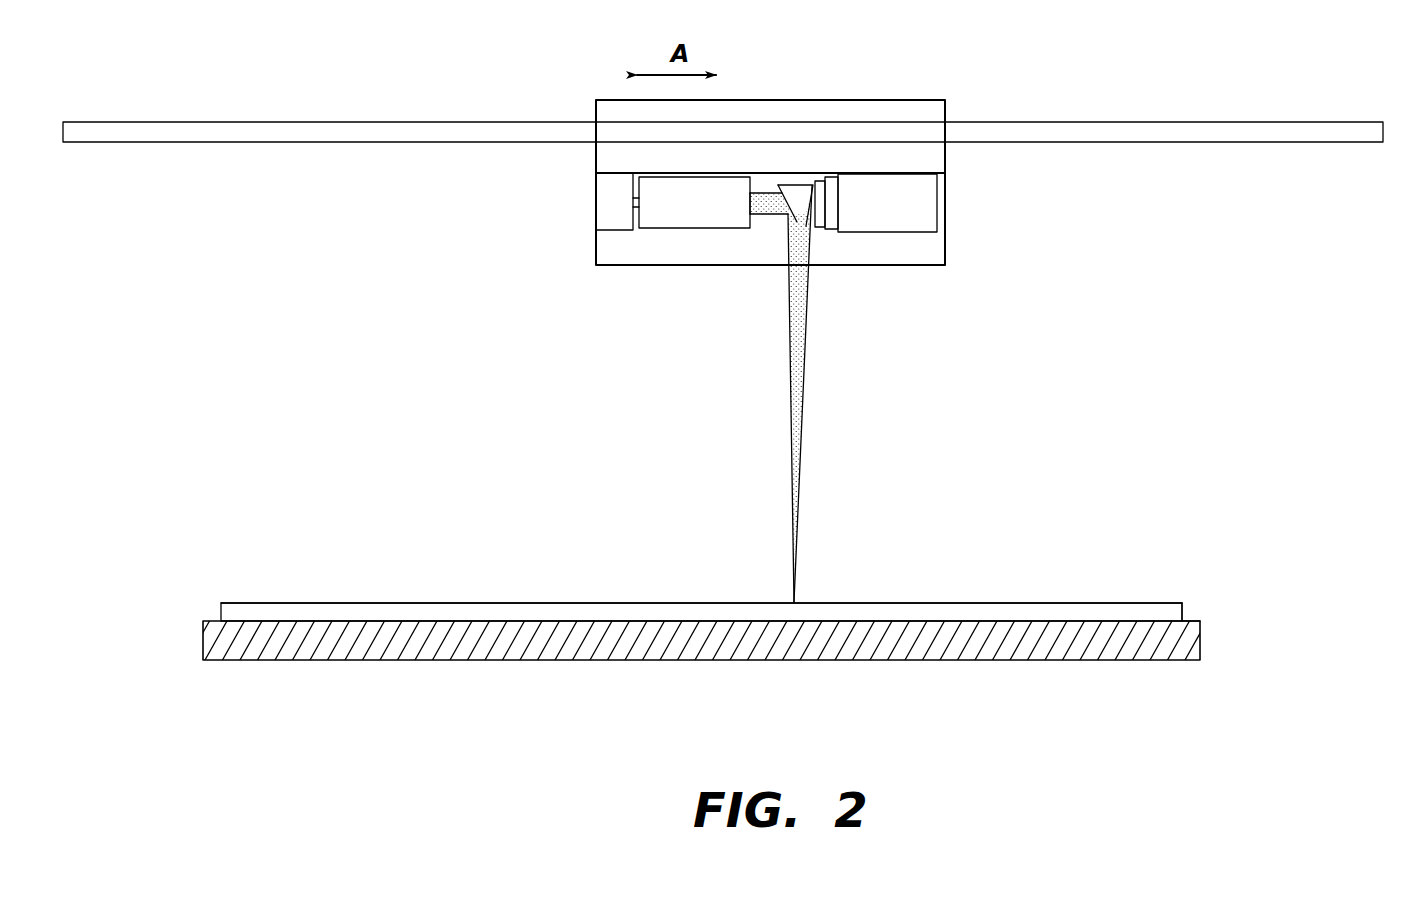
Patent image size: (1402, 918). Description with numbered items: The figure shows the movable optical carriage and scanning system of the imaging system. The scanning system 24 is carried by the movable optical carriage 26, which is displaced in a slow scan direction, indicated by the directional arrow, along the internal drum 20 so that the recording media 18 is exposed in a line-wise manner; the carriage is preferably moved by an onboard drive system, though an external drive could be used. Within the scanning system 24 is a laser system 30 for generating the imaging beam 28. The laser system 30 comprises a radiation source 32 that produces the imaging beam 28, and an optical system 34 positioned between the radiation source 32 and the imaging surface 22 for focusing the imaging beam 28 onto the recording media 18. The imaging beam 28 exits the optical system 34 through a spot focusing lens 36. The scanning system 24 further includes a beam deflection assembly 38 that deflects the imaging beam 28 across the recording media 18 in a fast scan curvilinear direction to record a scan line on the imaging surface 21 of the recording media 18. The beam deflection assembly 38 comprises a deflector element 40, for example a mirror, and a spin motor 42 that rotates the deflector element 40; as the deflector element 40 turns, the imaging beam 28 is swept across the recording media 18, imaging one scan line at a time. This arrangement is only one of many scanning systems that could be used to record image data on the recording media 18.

The recording media 18 is at (1108, 612).
The internal drum 20 is at (1117, 647).
The imaging surface of the recording media 21 is at (1023, 600).
The imaging surface 22 is at (1192, 620).
The scanning system 24 is at (688, 266).
The movable optical carriage 26 is at (877, 112).
The imaging beam 28 is at (798, 387).
The laser system 30 is at (663, 240).
The radiation source 32 is at (615, 223).
The optical system 34 is at (707, 220).
The spot focusing lens 36 is at (751, 203).
The beam deflection assembly 38 is at (907, 240).
The deflector element 40 is at (811, 209).
The spin motor 42 is at (872, 220).